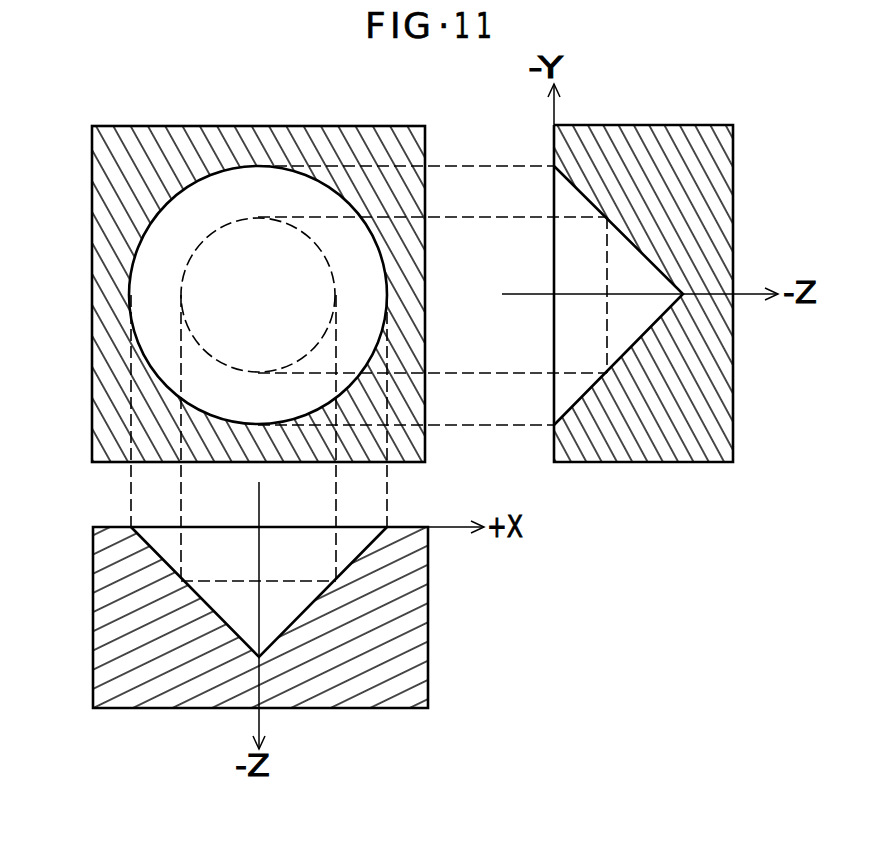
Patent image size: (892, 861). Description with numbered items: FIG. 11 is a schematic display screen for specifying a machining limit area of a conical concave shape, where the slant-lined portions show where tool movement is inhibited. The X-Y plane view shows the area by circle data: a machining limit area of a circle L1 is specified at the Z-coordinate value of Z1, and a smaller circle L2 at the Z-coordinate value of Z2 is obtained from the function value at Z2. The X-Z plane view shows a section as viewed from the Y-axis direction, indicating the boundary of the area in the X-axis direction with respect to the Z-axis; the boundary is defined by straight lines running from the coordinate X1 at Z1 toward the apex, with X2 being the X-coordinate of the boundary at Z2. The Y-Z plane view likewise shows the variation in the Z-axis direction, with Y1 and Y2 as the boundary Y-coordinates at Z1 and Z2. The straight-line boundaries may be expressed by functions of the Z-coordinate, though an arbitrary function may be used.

The circle L1 is at (235, 166).
The circle L2 is at (225, 222).
The Y-coordinate Y1 is at (553, 165).
The Y-coordinate Y2 is at (555, 217).
The Z-coordinate value Z1 is at (554, 292).
The Z-coordinate value Z2 is at (605, 292).
The X-coordinate X1 is at (388, 526).
The X-coordinate X2 is at (337, 526).